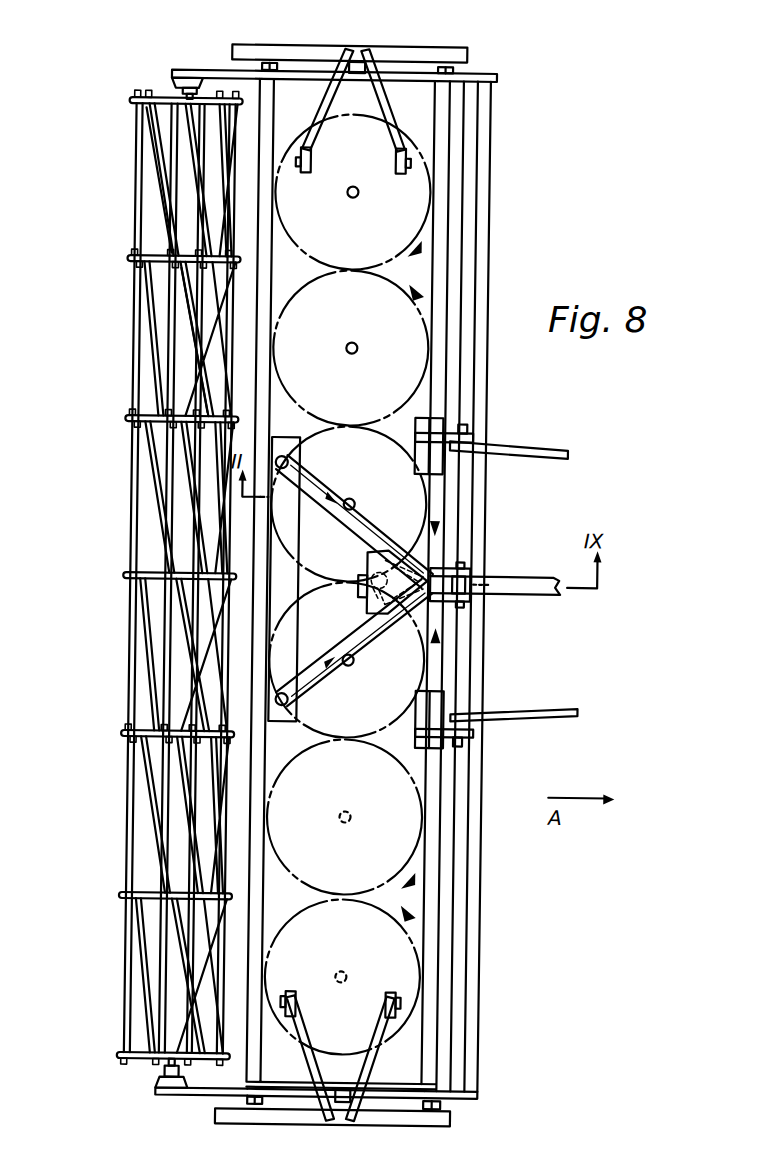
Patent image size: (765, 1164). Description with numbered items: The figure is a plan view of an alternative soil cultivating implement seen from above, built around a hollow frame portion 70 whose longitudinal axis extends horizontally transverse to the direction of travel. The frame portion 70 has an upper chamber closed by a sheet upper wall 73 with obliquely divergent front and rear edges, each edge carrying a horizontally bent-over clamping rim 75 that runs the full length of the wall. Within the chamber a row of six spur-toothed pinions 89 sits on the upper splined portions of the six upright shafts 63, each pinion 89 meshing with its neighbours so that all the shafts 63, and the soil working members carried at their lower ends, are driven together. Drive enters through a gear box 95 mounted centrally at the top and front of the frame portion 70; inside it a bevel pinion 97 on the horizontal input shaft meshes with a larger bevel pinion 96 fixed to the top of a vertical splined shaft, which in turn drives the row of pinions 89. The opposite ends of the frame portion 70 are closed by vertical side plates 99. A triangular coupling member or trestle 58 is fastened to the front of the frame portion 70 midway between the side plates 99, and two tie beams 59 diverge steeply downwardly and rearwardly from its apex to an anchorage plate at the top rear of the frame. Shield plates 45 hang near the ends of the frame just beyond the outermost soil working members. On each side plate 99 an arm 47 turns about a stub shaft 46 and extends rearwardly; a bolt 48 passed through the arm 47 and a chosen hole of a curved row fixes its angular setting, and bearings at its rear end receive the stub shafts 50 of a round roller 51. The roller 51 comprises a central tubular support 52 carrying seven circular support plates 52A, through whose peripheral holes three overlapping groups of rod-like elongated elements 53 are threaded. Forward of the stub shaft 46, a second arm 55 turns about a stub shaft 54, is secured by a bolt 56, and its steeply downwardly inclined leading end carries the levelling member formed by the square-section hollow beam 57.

The shield plate 45 is at (238, 46).
The stub shaft 46 is at (347, 48).
The arm 47 is at (186, 79).
The bolt 48 is at (262, 72).
The stub shaft 50 is at (188, 97).
The roller 51 is at (134, 228).
The tubular support 52 is at (176, 783).
The support plate 52A is at (134, 735).
The elongated element 53 is at (150, 316).
The stub shaft 54 is at (367, 58).
The arm 55 is at (497, 77).
The bolt 56 is at (455, 68).
The hollow beam 57 is at (481, 199).
The coupling member or trestle 58 is at (476, 537).
The tie beam 59 is at (334, 482).
The shaft 63 is at (355, 198).
The hollow frame portion 70 is at (455, 1025).
The upper wall 73 is at (440, 282).
The clamping rim 75 is at (452, 805).
The pinion 89 is at (317, 276).
The gear box 95 is at (417, 548).
The bevel pinion 96 is at (379, 612).
The bevel pinion 97 is at (373, 574).
The side plate 99 is at (398, 82).